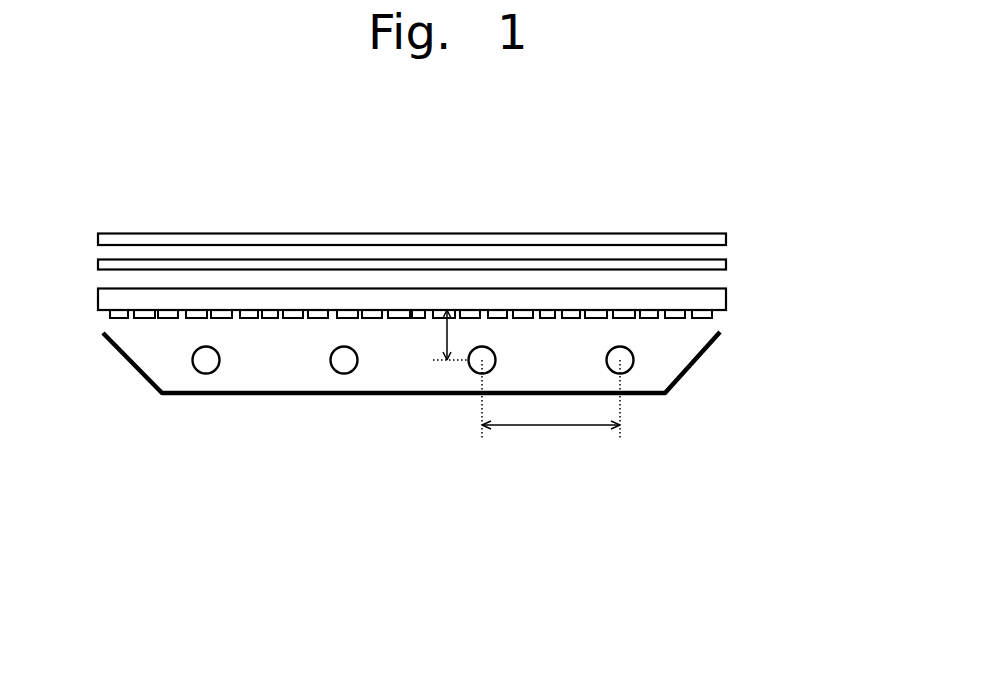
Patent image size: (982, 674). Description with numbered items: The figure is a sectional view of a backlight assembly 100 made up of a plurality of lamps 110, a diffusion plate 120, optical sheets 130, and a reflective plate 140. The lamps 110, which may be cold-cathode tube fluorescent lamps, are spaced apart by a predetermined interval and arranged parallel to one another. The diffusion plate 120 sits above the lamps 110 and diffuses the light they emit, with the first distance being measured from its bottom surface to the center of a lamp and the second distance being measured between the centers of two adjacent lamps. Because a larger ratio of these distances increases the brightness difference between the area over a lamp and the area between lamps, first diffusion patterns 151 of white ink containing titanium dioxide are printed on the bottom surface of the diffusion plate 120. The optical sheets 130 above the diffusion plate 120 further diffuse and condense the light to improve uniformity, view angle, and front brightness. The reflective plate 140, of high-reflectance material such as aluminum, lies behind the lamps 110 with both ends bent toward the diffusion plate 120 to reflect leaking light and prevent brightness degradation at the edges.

The backlight assembly 100 is at (746, 180).
The lamps 110 is at (345, 362).
The diffusion plate 120 is at (727, 298).
The optical sheets 130 is at (739, 233).
The reflective plate 140 is at (693, 363).
The first diffusion patterns 151 is at (673, 318).